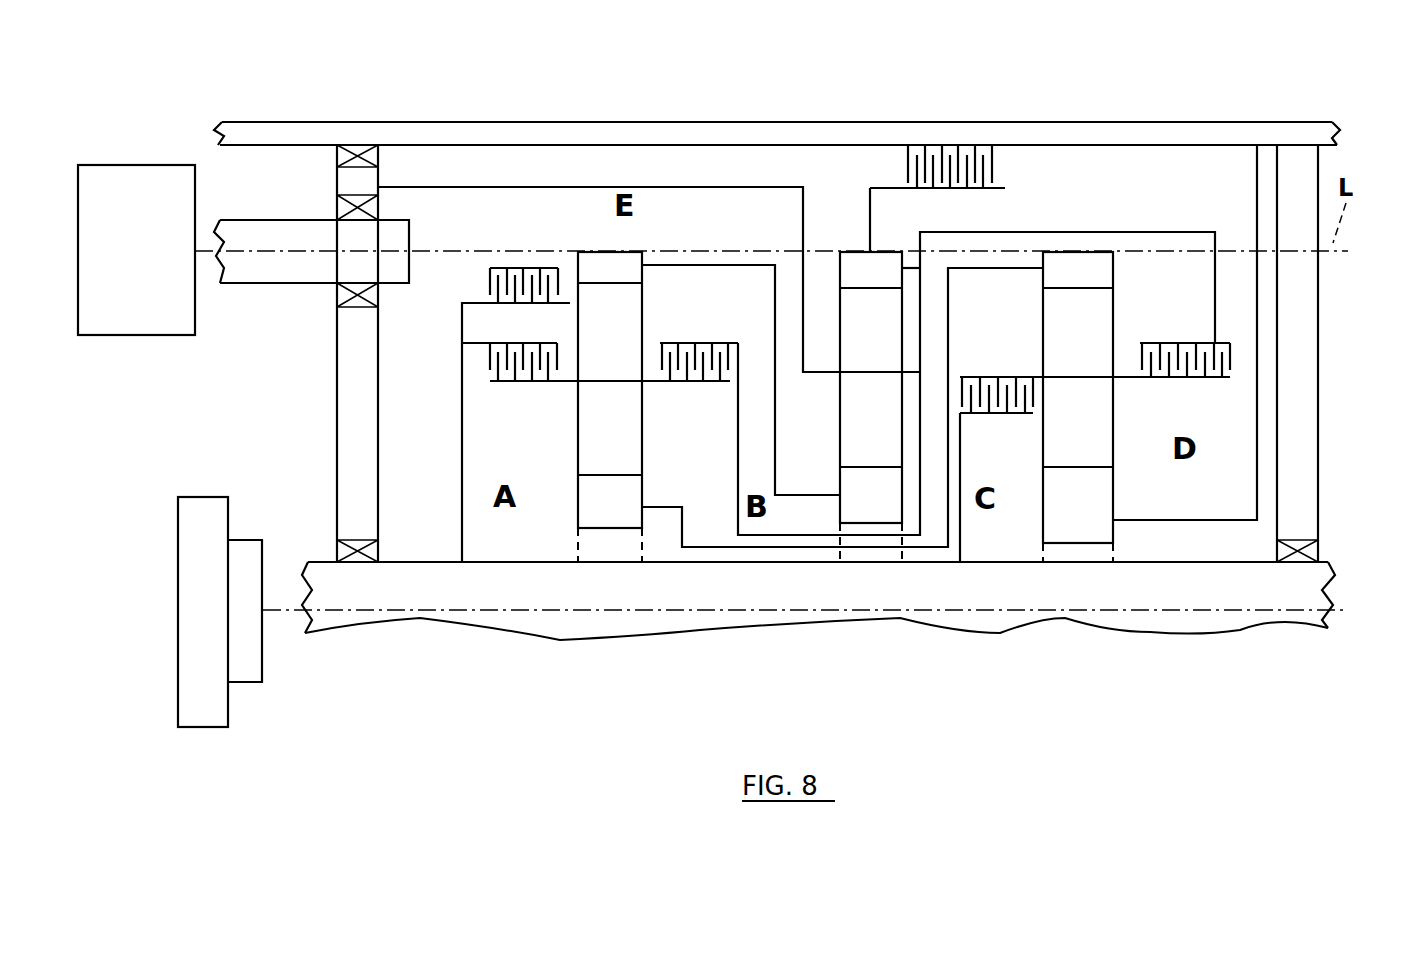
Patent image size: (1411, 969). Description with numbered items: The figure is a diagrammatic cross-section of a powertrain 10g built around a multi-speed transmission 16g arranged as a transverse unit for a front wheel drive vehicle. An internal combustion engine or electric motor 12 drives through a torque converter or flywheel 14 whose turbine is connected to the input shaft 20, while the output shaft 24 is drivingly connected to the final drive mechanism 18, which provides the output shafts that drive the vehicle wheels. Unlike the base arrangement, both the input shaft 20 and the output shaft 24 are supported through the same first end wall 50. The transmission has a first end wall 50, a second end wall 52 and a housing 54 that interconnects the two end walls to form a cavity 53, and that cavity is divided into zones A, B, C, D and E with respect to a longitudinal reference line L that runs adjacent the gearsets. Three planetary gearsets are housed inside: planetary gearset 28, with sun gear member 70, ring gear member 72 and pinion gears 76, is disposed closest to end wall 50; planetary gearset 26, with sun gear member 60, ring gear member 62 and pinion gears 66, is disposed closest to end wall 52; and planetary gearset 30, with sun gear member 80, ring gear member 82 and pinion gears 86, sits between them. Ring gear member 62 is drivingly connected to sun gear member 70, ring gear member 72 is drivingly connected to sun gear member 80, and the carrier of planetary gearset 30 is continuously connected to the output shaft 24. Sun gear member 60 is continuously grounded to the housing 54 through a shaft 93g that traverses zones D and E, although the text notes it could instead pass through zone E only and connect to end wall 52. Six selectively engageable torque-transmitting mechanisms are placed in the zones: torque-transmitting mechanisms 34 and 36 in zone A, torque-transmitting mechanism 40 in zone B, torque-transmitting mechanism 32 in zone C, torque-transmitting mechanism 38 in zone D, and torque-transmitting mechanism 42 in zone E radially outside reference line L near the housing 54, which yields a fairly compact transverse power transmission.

The powertrain 10g is at (275, 93).
The internal combustion engine or electric motor 12 is at (222, 592).
The torque converter or flywheel 14 is at (260, 594).
The transmission 16g is at (1332, 316).
The final drive mechanism 18 is at (138, 335).
The input shaft 20 is at (590, 640).
The output shaft 24 is at (290, 283).
The planetary gearset 26 is at (1070, 554).
The planetary gearset 28 is at (615, 542).
The planetary gearset 30 is at (862, 532).
The torque-transmitting mechanism 32 is at (975, 413).
The torque-transmitting mechanism 34 is at (490, 270).
The torque-transmitting mechanism 36 is at (492, 381).
The torque-transmitting mechanism 38 is at (1150, 377).
The torque-transmitting mechanism 40 is at (667, 381).
The torque-transmitting mechanism 42 is at (985, 188).
The first end wall 50 is at (337, 378).
The second end wall 52 is at (1320, 480).
The cavity 53 is at (1218, 190).
The housing 54 is at (1097, 118).
The sun gear member 60 is at (1091, 518).
The ring gear member 62 is at (1091, 284).
The pinion gears 66 is at (1091, 432).
The sun gear member 70 is at (623, 519).
The ring gear member 72 is at (623, 280).
The pinion gears 76 is at (623, 355).
The sun gear member 80 is at (884, 512).
The ring gear member 82 is at (884, 284).
The pinion gears 86 is at (884, 424).
The shaft 93g is at (1255, 480).